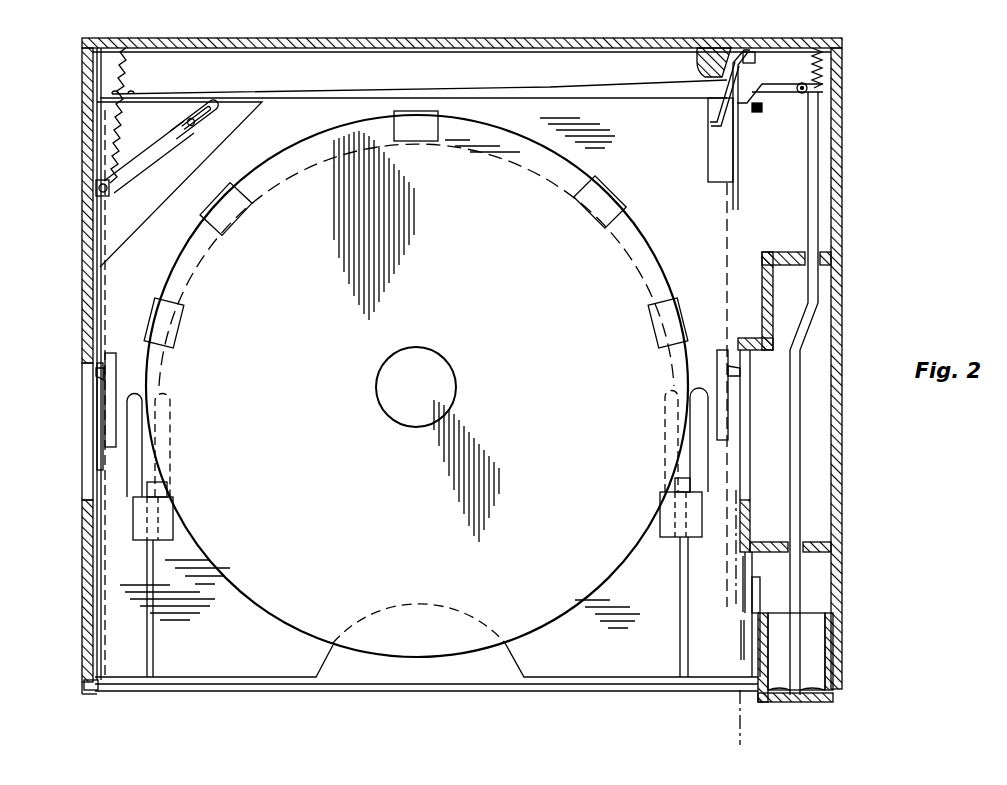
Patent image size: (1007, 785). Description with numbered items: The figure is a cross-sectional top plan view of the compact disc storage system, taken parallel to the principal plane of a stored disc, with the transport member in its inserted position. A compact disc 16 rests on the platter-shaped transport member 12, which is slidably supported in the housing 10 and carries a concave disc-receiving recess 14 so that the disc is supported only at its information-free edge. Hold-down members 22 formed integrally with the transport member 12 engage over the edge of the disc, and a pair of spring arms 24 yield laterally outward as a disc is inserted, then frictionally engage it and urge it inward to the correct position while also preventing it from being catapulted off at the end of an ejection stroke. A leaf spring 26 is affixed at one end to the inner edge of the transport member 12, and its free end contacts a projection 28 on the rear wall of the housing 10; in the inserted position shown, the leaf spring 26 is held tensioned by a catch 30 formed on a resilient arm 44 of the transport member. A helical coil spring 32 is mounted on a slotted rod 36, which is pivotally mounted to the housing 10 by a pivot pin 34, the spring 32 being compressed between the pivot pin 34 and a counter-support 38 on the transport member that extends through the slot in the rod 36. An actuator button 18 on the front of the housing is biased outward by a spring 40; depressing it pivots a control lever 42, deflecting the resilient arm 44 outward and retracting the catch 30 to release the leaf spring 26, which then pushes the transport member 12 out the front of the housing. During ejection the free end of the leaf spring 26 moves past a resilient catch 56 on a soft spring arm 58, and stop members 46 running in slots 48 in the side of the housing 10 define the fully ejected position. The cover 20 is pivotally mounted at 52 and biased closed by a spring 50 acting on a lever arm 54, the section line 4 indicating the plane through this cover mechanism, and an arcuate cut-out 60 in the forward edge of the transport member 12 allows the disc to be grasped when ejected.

The section line 4 is at (695, 508).
The housing 10 is at (84, 245).
The transport member 12 is at (147, 660).
The disc-receiving recess 14 is at (598, 660).
The compact disc 16 is at (276, 607).
The actuator button 18 is at (812, 692).
The cover 20 is at (250, 692).
The hold-down member 22 is at (424, 140).
The spring arm 24 is at (136, 461).
The leaf spring 26 is at (572, 90).
The projection 28 is at (705, 62).
The catch 30 is at (735, 48).
The helical coil spring 32 is at (146, 158).
The pivot pin 34 is at (96, 188).
The slotted rod 36 is at (215, 108).
The counter-support 38 is at (188, 120).
The spring 40 is at (812, 56).
The control lever 42 is at (786, 94).
The resilient arm 44 is at (726, 166).
The stop member 46 is at (99, 374).
The slot 48 is at (105, 400).
The spring 50 is at (748, 600).
The pivotal mounting 52 is at (90, 690).
The lever arm 54 is at (746, 652).
The resilient catch 56 is at (722, 126).
The spring arm 58 is at (727, 110).
The arcuate cut-out 60 is at (520, 660).